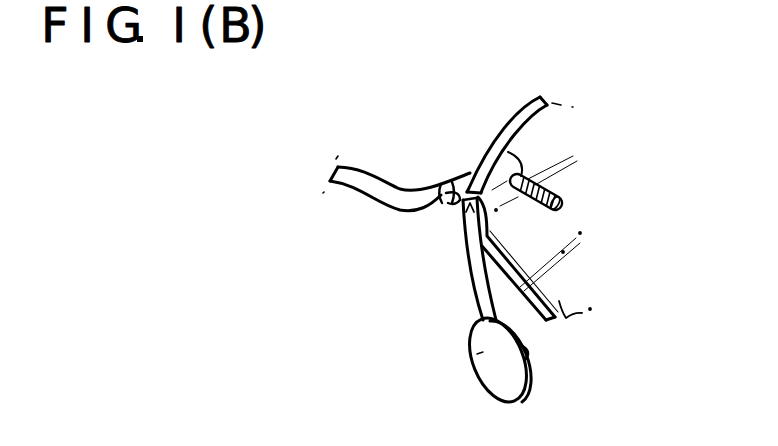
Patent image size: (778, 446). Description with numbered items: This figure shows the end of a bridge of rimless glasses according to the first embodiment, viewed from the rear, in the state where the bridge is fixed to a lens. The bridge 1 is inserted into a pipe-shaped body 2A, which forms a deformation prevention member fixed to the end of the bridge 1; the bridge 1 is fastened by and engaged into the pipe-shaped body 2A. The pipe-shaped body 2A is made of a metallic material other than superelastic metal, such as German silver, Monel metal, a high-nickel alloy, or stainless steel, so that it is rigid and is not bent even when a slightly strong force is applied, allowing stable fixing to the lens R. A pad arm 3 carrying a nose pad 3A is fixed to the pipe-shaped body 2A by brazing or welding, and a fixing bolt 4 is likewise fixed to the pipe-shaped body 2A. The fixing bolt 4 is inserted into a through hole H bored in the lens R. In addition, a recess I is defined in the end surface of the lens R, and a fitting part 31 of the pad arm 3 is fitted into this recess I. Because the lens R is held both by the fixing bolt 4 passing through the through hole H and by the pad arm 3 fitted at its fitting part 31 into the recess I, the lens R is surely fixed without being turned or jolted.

The bridge 1 is at (382, 198).
The pipe-shaped body 2A is at (459, 172).
The fitting part 31 is at (462, 204).
The recess I is at (468, 215).
The pad arm 3 is at (473, 265).
The nose pad 3A is at (478, 354).
The through hole H is at (527, 173).
The fixing bolt 4 is at (565, 187).
The lens R is at (566, 318).